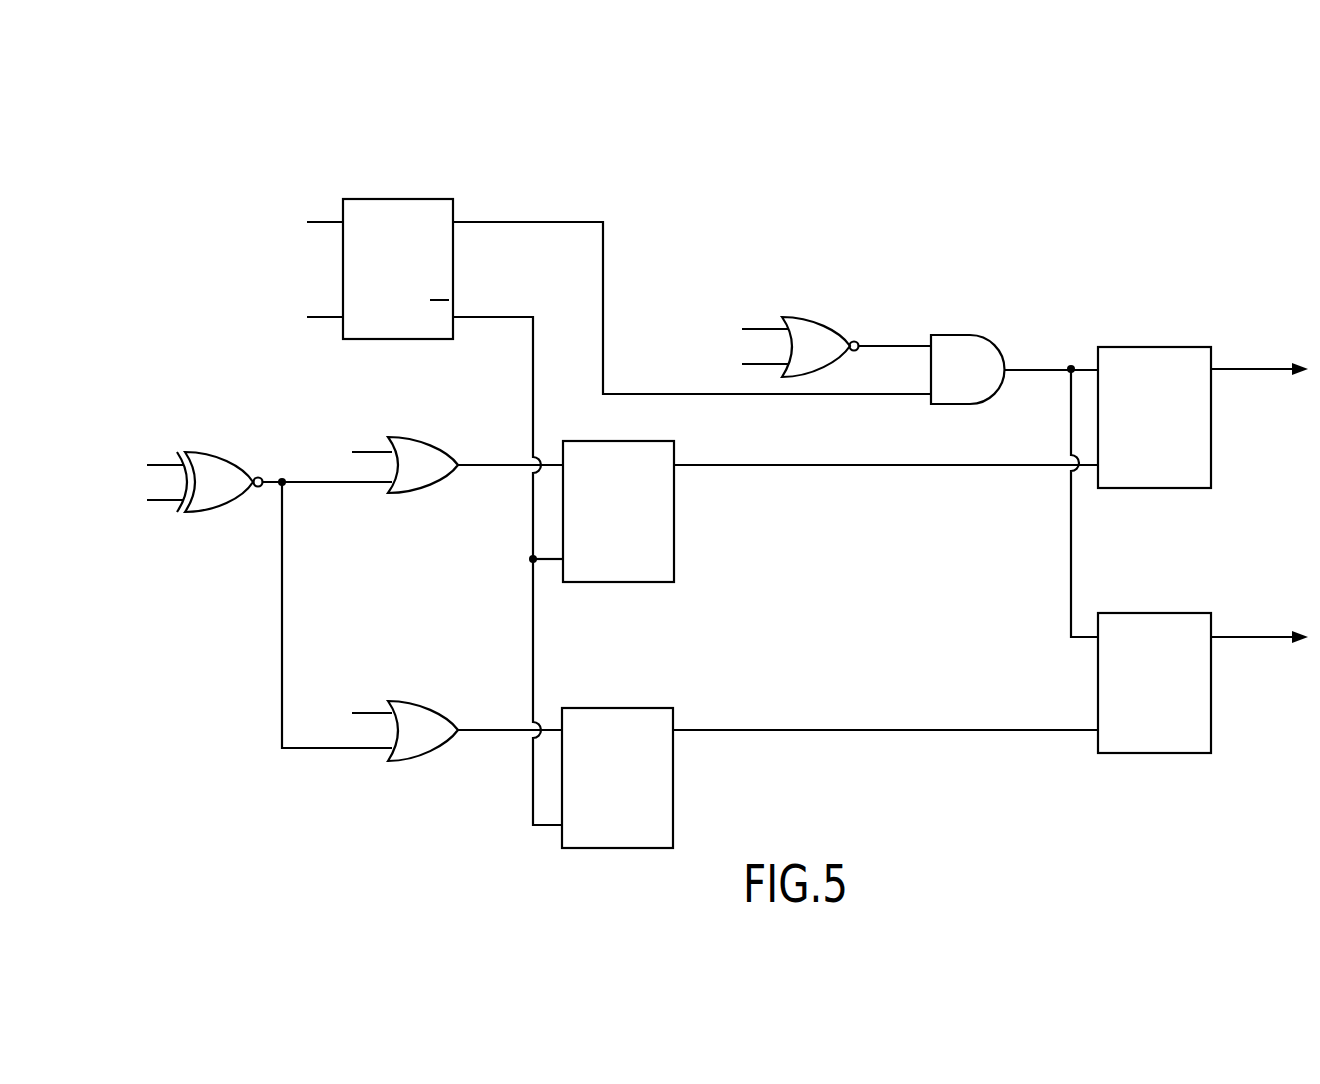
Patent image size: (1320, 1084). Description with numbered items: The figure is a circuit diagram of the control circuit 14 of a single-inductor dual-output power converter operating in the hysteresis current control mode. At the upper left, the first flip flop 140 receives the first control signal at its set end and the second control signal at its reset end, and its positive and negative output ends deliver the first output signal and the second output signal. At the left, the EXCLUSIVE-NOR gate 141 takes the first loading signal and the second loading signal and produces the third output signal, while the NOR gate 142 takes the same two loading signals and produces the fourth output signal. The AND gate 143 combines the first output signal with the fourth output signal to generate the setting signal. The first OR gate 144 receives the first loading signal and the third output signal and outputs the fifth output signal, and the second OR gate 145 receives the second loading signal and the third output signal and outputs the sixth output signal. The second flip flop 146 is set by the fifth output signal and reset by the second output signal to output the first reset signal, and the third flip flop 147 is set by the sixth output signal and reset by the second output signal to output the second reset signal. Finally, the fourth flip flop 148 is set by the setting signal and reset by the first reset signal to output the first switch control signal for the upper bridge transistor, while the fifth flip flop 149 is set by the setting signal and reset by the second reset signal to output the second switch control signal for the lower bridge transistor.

The control circuit 14 is at (1272, 143).
The first flip flop 140 is at (396, 199).
The EXCLUSIVE-NOR gate 141 is at (199, 452).
The NOR gate 142 is at (796, 317).
The AND gate 143 is at (956, 335).
The first OR gate 144 is at (404, 437).
The second OR gate 145 is at (404, 701).
The second flip flop 146 is at (674, 512).
The third flip flop 147 is at (673, 777).
The fourth flip flop 148 is at (1152, 347).
The fifth flip flop 149 is at (1152, 613).